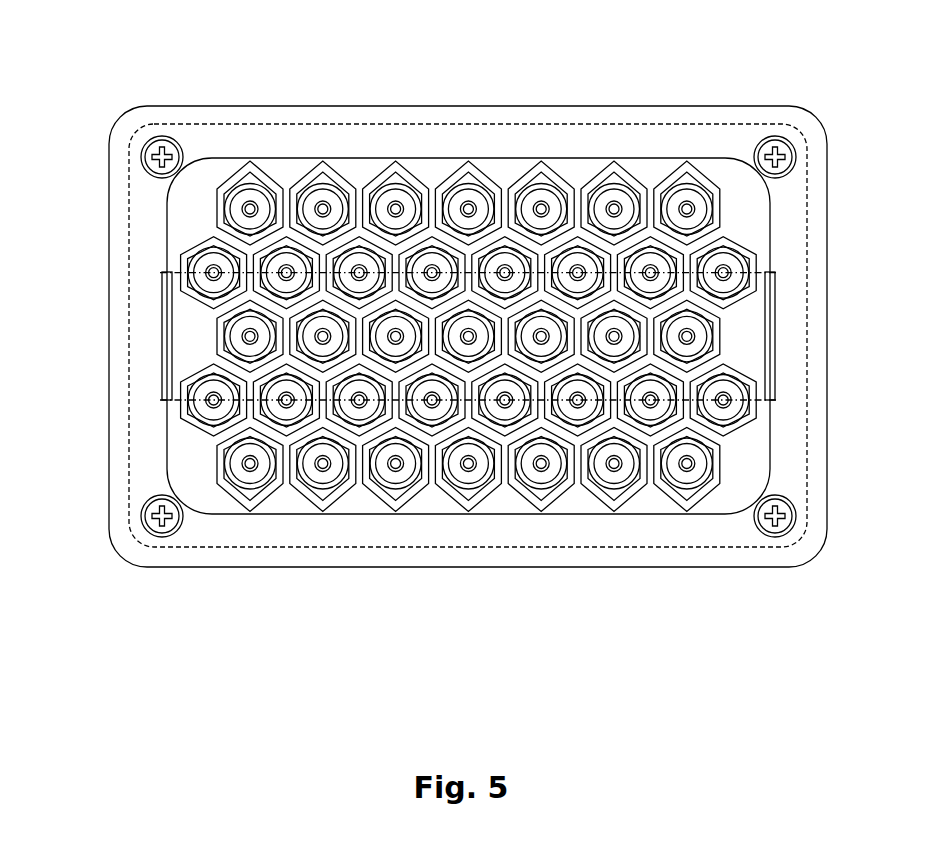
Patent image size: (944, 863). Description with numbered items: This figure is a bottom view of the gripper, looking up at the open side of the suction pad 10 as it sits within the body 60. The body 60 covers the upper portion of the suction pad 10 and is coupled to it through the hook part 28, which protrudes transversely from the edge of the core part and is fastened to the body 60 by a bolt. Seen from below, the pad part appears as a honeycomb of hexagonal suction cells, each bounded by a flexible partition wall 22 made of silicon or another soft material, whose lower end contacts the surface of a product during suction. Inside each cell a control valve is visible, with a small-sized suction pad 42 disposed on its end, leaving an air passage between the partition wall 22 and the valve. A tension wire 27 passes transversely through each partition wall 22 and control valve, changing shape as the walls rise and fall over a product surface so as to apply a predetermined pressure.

The body 60 is at (356, 96).
The suction pad 10 is at (494, 156).
The hook part 28 is at (401, 387).
The tension wire 27 is at (748, 258).
The small-sized suction pad 42 is at (469, 387).
The flexible partition wall 22 is at (536, 478).